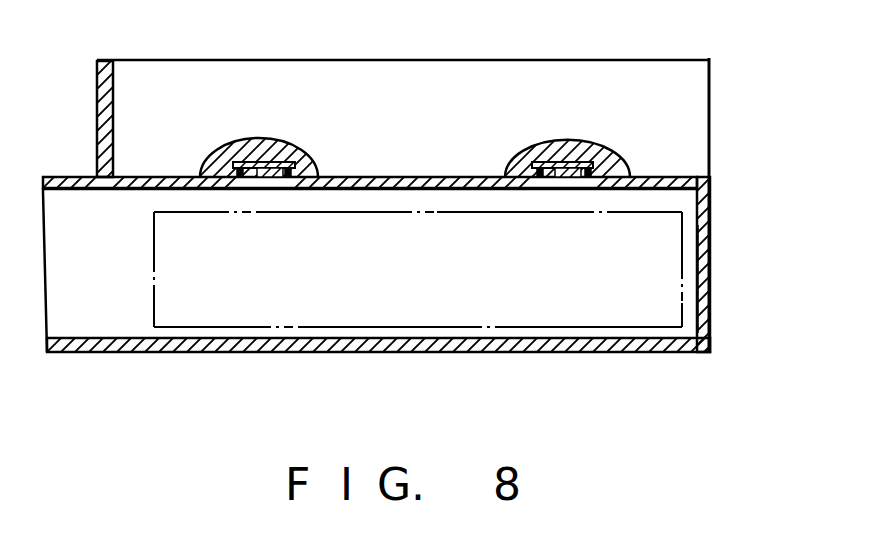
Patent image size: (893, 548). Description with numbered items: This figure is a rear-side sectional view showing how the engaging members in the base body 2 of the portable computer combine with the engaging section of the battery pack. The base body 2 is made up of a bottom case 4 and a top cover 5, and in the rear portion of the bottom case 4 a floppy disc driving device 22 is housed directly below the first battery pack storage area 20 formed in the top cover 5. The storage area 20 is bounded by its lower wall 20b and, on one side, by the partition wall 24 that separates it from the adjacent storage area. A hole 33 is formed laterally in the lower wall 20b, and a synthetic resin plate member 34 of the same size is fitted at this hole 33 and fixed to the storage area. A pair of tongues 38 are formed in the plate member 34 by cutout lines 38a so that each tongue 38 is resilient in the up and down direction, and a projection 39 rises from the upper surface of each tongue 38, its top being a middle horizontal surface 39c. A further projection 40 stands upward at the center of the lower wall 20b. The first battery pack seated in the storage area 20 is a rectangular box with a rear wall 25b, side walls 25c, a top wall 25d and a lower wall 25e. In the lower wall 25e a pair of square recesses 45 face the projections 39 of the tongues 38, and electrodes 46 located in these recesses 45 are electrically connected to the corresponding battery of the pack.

The base body 2 is at (782, 227).
The bottom case 4 is at (716, 302).
The top cover 5 is at (716, 242).
The first battery pack storage area 20 is at (377, 170).
The lower wall 20b is at (672, 174).
The floppy disc driving device 22 is at (558, 298).
The partition wall 24 is at (97, 120).
The rear wall 25b is at (695, 74).
The side walls 25c is at (710, 98).
The top wall 25d is at (410, 60).
The lower wall 25e is at (452, 190).
The hole 33 is at (178, 191).
The plate member 34 is at (393, 190).
The tongues 38 is at (270, 178).
The cutout line 38a is at (297, 180).
The projection 39 is at (300, 152).
The middle horizontal surface 39c is at (270, 160).
The projection 40 is at (549, 180).
The square recesses 45 is at (210, 158).
The electrodes 46 is at (245, 160).